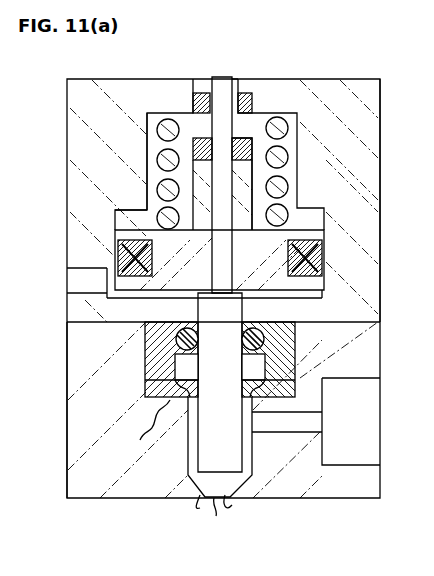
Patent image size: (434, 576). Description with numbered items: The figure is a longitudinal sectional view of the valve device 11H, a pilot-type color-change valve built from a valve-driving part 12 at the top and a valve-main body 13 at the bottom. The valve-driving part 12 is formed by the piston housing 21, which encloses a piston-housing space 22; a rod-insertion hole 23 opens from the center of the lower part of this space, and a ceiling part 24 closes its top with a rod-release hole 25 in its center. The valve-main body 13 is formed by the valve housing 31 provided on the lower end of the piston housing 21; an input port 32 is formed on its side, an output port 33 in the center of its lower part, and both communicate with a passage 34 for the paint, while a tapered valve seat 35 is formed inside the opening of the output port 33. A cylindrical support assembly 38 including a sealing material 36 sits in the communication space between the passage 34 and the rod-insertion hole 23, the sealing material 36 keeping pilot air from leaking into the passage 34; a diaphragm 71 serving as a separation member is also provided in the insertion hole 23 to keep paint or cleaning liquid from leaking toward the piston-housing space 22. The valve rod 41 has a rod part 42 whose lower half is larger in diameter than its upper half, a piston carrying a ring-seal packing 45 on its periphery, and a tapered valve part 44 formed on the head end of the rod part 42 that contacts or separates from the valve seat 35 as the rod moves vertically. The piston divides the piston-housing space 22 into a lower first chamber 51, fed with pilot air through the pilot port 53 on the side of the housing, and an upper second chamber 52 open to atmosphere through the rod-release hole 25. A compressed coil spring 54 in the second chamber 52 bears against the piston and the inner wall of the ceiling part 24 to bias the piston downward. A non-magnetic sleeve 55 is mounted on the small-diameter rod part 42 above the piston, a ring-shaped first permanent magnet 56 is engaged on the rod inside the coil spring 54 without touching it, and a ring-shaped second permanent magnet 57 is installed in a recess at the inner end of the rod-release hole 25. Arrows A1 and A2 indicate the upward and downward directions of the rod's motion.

The valve device 11H is at (320, 79).
The valve-driving part 12 is at (67, 128).
The valve-main body 13 is at (67, 463).
The piston housing 21 is at (378, 120).
The piston-housing space 22 is at (147, 143).
The rod-insertion hole 23 is at (222, 312).
The ceiling part 24 is at (170, 79).
The rod-release hole 25 is at (212, 77).
The valve housing 31 is at (70, 408).
The input port 32 is at (345, 464).
The output port 33 is at (230, 497).
The passage 34 is at (296, 432).
The valve seat 35 is at (202, 497).
The sealing material 36 is at (176, 340).
The cylindrical support assembly 38 is at (275, 340).
The valve rod 41 is at (228, 78).
The rod part 42 is at (220, 395).
The valve part 44 is at (214, 500).
The ring-seal packing 45 is at (322, 262).
The first chamber 51 is at (138, 296).
The second chamber 52 is at (148, 203).
The pilot port 53 is at (88, 280).
The coil spring 54 is at (285, 155).
The sleeve 55 is at (270, 202).
The first permanent magnet 56 is at (165, 172).
The second permanent magnet 57 is at (195, 103).
The diaphragm 71 is at (148, 424).
The upward direction A1 is at (393, 150).
The downward direction A2 is at (393, 432).